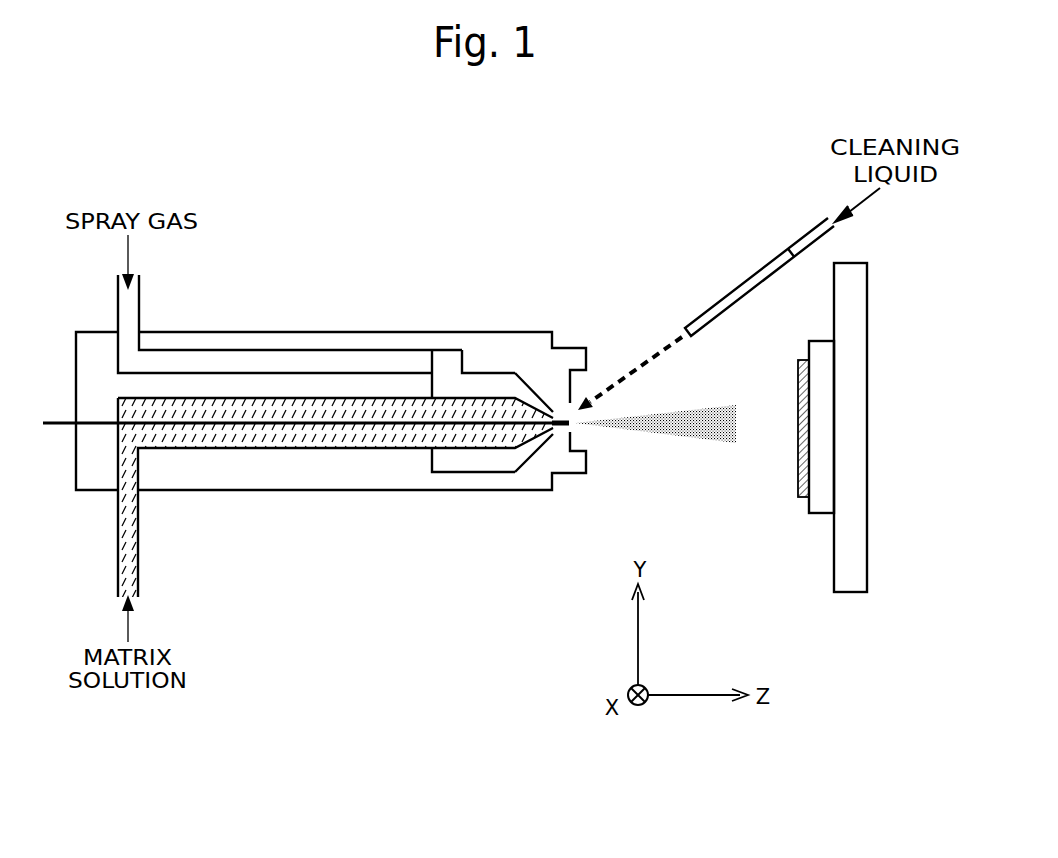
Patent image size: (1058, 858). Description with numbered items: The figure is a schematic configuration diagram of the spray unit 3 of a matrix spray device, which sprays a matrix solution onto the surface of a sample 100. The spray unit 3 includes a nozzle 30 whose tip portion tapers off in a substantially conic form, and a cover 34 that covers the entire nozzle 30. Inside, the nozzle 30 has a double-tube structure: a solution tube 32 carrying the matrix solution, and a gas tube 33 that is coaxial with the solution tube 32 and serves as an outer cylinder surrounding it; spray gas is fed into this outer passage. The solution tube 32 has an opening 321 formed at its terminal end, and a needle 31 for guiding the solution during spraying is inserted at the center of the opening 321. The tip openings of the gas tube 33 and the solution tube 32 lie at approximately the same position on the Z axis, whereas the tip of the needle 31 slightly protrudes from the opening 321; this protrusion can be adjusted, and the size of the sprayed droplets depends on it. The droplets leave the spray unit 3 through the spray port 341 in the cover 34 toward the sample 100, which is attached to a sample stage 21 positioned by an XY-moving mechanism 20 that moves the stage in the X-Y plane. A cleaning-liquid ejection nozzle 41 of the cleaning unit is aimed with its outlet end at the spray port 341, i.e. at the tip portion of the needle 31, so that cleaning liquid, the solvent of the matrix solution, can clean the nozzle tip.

The spray unit 3 is at (516, 244).
The nozzle 30 is at (518, 374).
The needle 31 is at (557, 425).
The solution tube 32 is at (403, 405).
The opening 321 is at (571, 404).
The gas tube 33 is at (483, 378).
The cover 34 is at (462, 492).
The spray port 341 is at (579, 429).
The cleaning-liquid ejection nozzle 41 is at (741, 278).
The XY-moving mechanism 20 is at (850, 590).
The sample stage 21 is at (817, 515).
The sample 100 is at (800, 490).